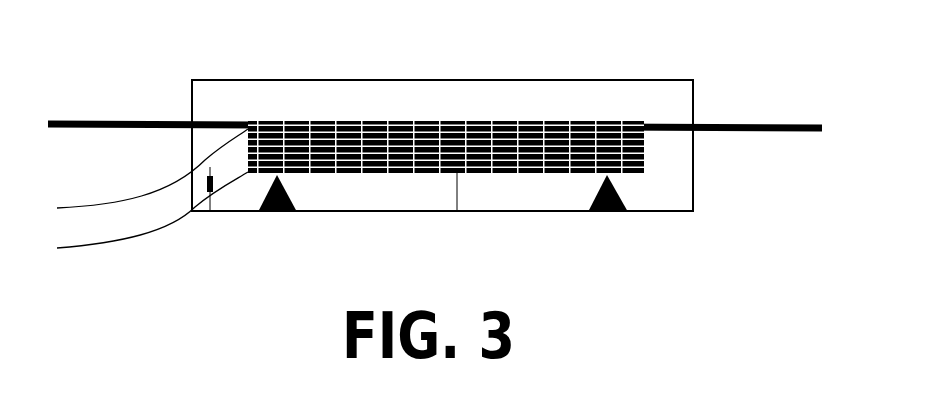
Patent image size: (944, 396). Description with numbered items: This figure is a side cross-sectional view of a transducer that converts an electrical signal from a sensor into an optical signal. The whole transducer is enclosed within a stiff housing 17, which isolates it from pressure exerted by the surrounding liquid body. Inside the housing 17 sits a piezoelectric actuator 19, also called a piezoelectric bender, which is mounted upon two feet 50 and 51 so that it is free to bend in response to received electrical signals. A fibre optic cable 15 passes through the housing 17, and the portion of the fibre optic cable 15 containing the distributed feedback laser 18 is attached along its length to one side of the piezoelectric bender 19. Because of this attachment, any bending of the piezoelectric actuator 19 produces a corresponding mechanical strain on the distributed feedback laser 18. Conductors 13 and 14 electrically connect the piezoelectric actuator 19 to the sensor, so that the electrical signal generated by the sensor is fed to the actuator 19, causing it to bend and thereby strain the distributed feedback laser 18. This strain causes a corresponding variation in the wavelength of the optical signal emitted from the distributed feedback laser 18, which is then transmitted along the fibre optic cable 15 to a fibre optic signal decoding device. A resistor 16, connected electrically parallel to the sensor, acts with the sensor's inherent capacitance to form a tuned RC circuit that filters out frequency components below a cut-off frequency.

The conductor 13 is at (88, 199).
The conductor 14 is at (86, 244).
The fibre optic cable 15 is at (758, 124).
The resistor 16 is at (215, 212).
The housing 17 is at (490, 80).
The distributed feedback laser 18 is at (435, 114).
The piezoelectric actuator 19 is at (458, 214).
The foot 50 is at (291, 212).
The foot 51 is at (612, 214).